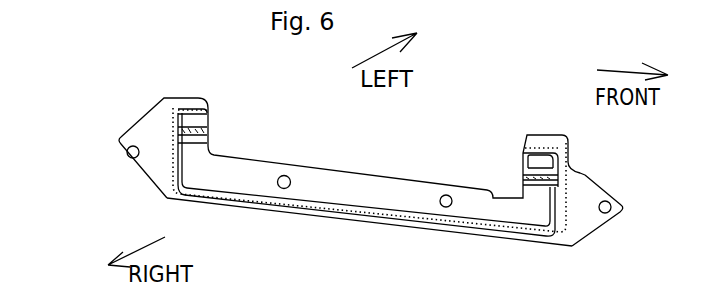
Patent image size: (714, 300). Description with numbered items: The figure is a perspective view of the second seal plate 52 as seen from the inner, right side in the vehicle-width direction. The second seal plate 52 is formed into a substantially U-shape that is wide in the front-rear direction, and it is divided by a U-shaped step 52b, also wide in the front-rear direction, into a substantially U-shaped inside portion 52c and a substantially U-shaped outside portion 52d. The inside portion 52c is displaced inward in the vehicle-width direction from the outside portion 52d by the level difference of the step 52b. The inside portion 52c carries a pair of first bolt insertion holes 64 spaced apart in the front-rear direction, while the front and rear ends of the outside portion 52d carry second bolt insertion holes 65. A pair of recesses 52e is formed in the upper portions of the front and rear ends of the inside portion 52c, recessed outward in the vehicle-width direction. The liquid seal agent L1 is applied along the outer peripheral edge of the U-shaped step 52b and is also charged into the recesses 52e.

The second seal plate 52 is at (118, 111).
The U-shaped step 52b is at (370, 220).
The inside portion 52c is at (332, 184).
The outside portion 52d is at (477, 229).
The recesses 52e is at (208, 134).
The first bolt insertion holes 64 is at (285, 176).
The second bolt insertion holes 65 is at (127, 152).
The liquid seal agent L1 is at (191, 132).